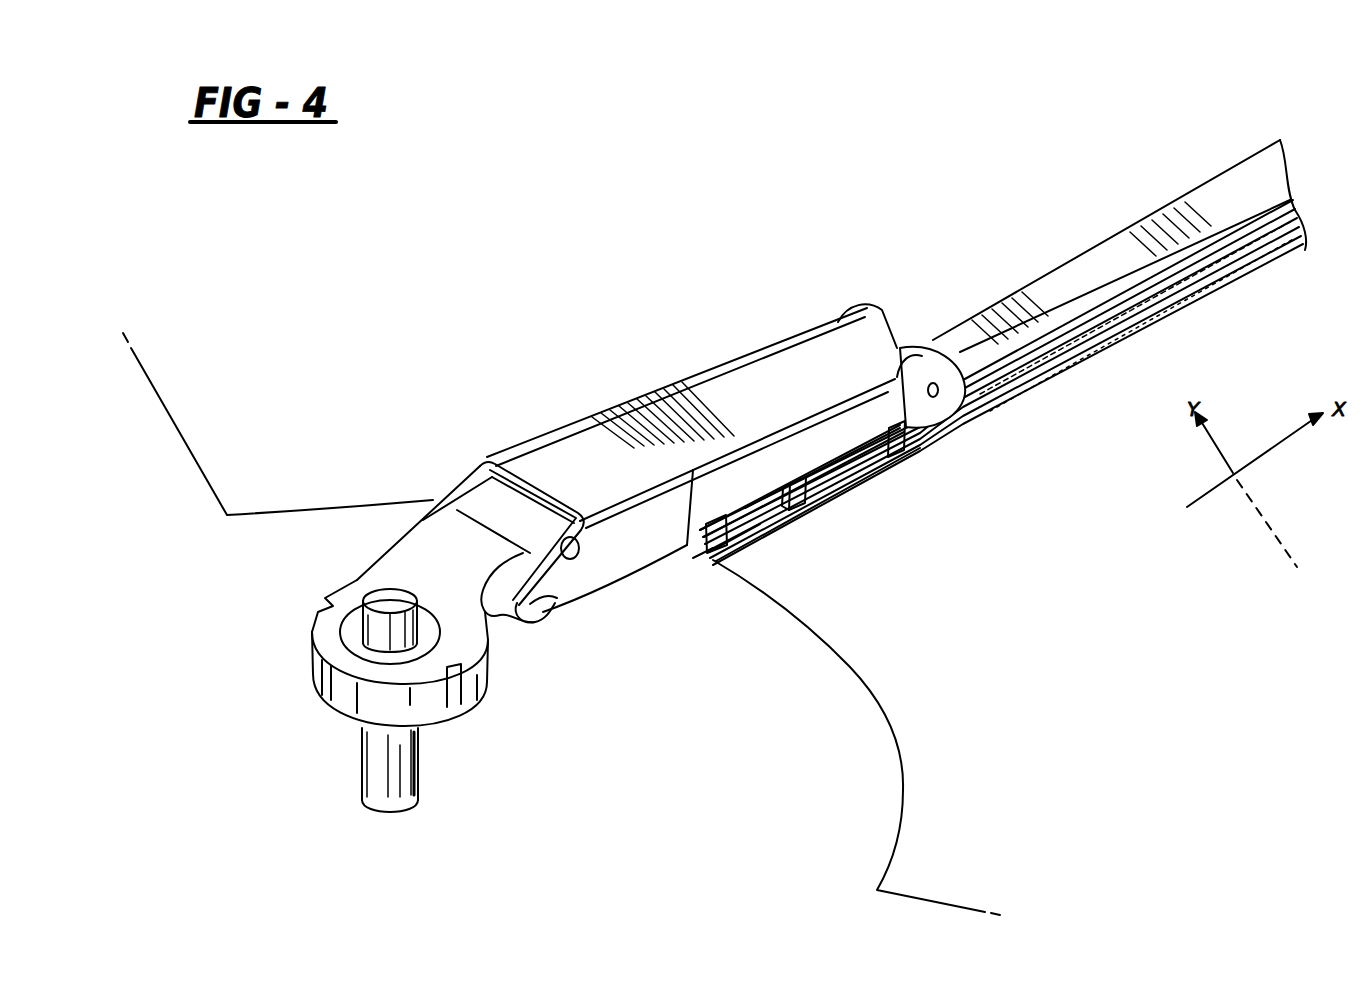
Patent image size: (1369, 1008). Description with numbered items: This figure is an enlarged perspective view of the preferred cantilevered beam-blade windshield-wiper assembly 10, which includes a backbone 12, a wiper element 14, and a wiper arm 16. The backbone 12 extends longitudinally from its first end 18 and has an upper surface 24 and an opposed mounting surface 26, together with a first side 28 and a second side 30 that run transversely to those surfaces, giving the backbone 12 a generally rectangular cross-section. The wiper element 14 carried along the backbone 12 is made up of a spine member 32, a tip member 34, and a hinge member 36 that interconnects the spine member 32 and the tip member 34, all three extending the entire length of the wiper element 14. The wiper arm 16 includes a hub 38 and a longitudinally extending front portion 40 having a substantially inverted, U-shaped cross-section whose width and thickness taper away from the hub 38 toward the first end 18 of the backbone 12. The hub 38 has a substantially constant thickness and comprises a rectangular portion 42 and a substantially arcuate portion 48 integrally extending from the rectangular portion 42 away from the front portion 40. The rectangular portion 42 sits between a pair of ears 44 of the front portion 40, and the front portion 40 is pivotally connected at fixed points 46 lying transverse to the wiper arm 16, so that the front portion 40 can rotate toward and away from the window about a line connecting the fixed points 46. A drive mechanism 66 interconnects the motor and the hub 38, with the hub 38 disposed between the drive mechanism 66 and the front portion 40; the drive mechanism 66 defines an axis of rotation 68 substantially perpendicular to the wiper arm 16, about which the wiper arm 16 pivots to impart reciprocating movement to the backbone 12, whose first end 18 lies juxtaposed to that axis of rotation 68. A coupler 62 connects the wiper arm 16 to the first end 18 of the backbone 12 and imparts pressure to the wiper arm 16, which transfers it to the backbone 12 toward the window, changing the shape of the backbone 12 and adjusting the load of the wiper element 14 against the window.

The wiper assembly 10 is at (597, 256).
The backbone 12 is at (1107, 247).
The wiper element 14 is at (1257, 260).
The wiper arm 16 is at (730, 339).
The first end 18 is at (960, 345).
The upper surface 24 is at (1232, 195).
The mounting surface 26 is at (758, 505).
The first side 28 is at (1040, 283).
The second side 30 is at (1120, 320).
The spine member 32 is at (747, 550).
The tip member 34 is at (716, 562).
The hinge member 36 is at (691, 548).
The hub 38 is at (370, 582).
The front portion 40 is at (562, 442).
The rectangular portion 42 is at (470, 498).
The ears 44 is at (460, 472).
The fixed points 46 is at (577, 560).
The arcuate portion 48 is at (327, 647).
The coupler 62 is at (830, 460).
The drive mechanism 66 is at (418, 775).
The axis of rotation 68 is at (397, 813).